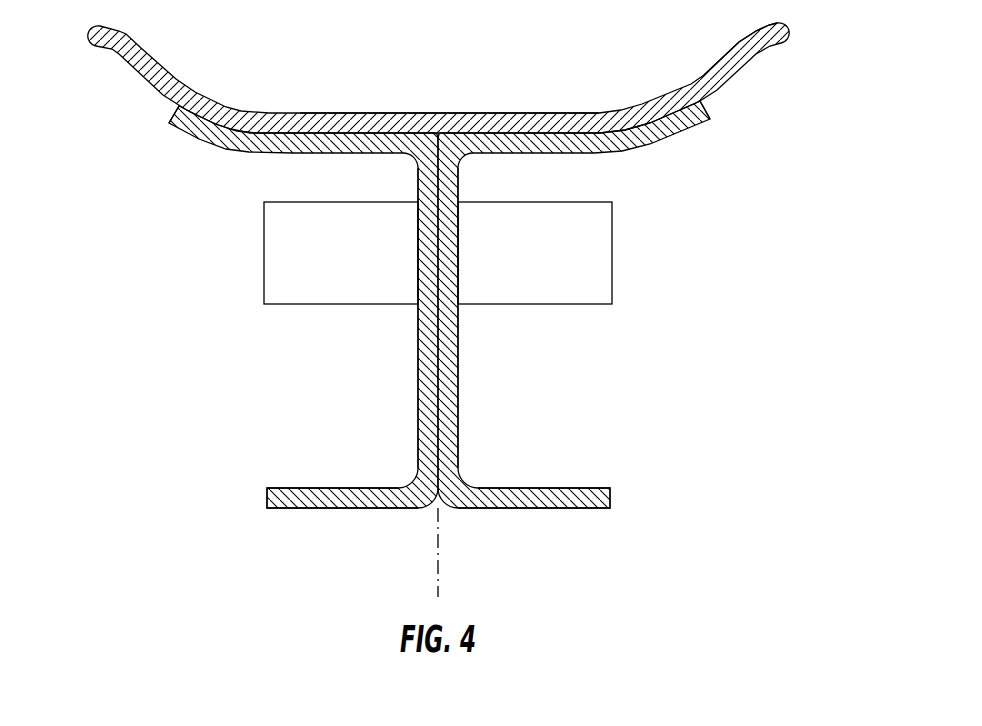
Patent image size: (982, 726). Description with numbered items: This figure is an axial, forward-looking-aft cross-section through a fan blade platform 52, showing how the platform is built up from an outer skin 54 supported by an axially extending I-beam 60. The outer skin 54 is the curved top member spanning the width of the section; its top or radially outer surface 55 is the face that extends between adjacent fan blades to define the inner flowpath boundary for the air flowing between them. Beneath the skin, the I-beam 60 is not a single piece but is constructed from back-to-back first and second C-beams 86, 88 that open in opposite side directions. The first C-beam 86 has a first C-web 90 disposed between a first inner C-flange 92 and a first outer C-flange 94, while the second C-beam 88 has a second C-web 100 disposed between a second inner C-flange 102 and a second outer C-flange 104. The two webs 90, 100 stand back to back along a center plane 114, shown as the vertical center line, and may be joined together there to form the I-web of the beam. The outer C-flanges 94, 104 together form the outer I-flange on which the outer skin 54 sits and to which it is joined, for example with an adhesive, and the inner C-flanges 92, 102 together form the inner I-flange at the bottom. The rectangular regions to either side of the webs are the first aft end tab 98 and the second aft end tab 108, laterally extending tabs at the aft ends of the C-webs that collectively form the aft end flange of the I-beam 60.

The platform 52 is at (349, 64).
The outer skin 54 is at (730, 50).
The radially outer surface 55 is at (557, 107).
The I-beam 60 is at (432, 333).
The first C-beam 86 is at (672, 160).
The second C-beam 88 is at (228, 160).
The first C-web 90 is at (448, 358).
The first inner C-flange 92 is at (542, 500).
The first outer C-flange 94 is at (702, 117).
The first aft end tab 98 is at (549, 268).
The second C-web 100 is at (425, 358).
The second inner C-flange 102 is at (320, 500).
The second outer C-flange 104 is at (180, 123).
The second aft end tab 108 is at (360, 268).
The center plane 114 is at (438, 575).